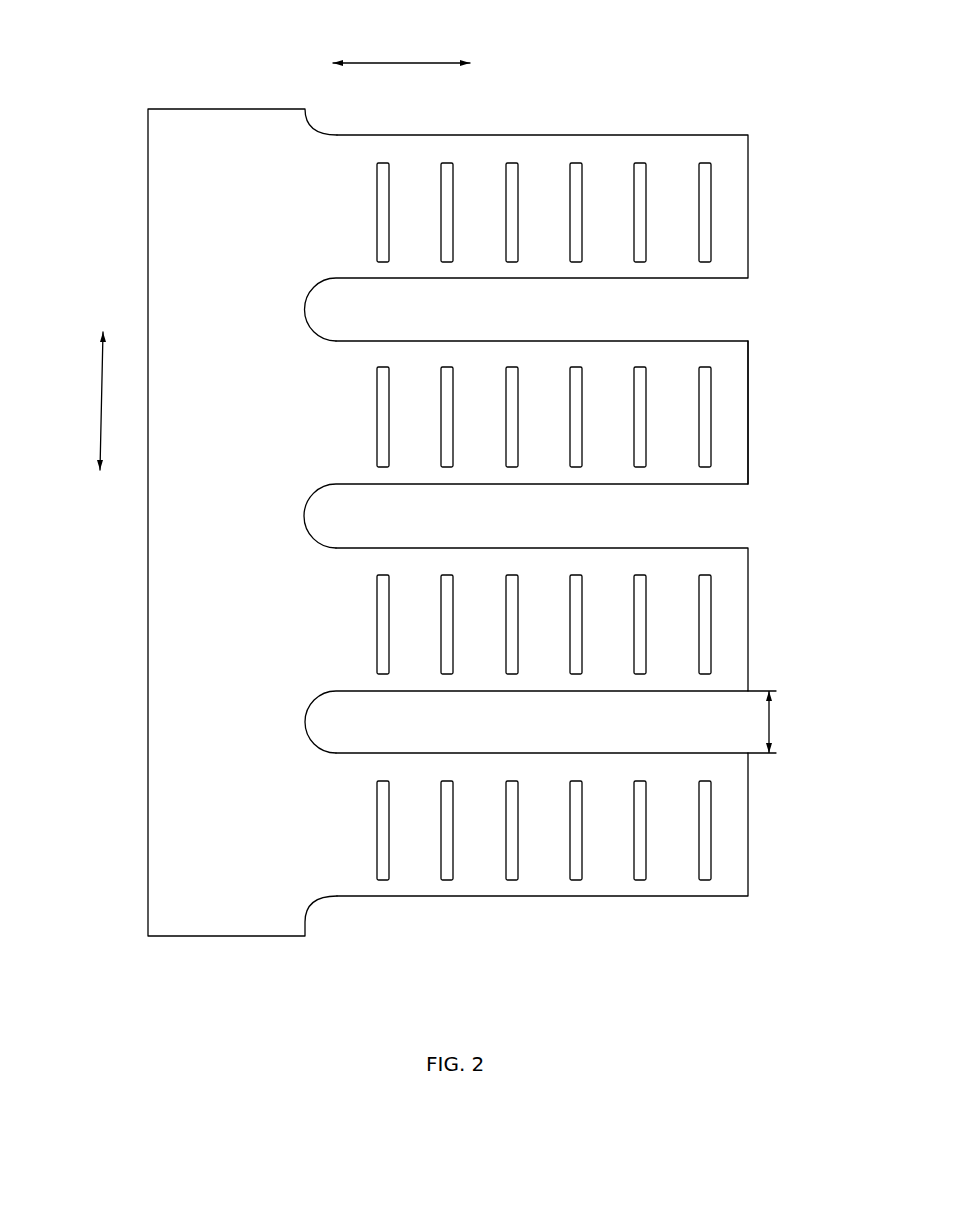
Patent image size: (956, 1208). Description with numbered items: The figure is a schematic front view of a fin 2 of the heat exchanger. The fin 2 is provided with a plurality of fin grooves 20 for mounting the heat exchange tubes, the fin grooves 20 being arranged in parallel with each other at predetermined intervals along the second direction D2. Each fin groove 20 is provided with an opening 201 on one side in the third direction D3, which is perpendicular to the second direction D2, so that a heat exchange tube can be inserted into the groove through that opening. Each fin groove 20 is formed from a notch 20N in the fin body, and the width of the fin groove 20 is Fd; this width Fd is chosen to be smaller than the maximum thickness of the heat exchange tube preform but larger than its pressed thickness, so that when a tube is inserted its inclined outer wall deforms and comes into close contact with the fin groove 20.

The fin 2 is at (478, 472).
The fin groove 20 is at (668, 278).
The opening 201 is at (748, 341).
The notch 20N is at (628, 484).
The width of the fin groove Fd is at (776, 722).
The second direction D2 is at (81, 401).
The third direction D3 is at (401, 48).